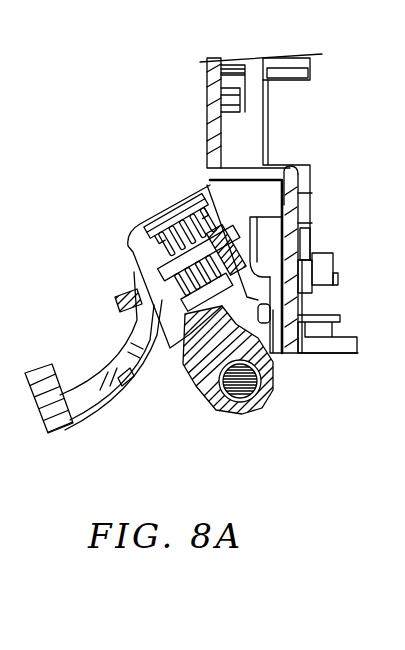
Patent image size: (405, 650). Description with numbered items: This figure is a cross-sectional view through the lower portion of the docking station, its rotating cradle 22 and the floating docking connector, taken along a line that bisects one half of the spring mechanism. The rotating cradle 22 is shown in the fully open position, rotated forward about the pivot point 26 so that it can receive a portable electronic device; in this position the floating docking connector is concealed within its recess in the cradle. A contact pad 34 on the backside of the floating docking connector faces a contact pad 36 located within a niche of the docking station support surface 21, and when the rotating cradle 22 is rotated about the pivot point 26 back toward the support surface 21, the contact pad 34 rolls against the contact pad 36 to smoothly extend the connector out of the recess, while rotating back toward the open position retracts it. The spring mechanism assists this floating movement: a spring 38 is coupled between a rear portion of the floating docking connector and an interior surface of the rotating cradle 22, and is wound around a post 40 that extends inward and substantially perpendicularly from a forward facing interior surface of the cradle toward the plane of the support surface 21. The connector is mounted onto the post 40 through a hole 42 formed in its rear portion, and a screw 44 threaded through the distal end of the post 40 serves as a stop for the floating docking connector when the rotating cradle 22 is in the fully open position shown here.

The support surface 21 is at (204, 74).
The rotating cradle 22 is at (65, 436).
The pivot point 26 is at (262, 391).
The contact pad 34 is at (260, 256).
The contact pad 36 is at (302, 193).
The spring 38 is at (168, 232).
The post 40 is at (181, 296).
The hole 42 is at (238, 233).
The screw 44 is at (275, 214).